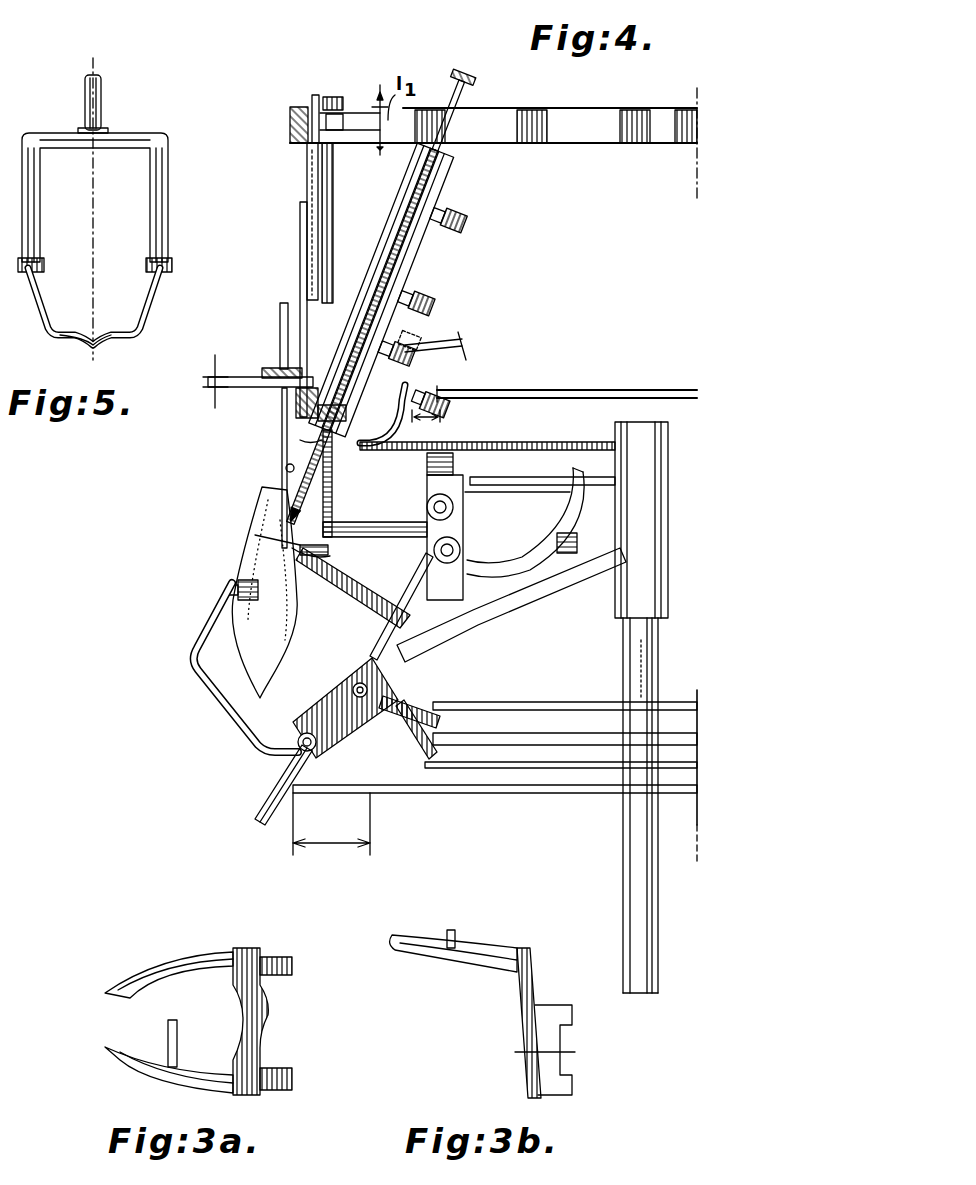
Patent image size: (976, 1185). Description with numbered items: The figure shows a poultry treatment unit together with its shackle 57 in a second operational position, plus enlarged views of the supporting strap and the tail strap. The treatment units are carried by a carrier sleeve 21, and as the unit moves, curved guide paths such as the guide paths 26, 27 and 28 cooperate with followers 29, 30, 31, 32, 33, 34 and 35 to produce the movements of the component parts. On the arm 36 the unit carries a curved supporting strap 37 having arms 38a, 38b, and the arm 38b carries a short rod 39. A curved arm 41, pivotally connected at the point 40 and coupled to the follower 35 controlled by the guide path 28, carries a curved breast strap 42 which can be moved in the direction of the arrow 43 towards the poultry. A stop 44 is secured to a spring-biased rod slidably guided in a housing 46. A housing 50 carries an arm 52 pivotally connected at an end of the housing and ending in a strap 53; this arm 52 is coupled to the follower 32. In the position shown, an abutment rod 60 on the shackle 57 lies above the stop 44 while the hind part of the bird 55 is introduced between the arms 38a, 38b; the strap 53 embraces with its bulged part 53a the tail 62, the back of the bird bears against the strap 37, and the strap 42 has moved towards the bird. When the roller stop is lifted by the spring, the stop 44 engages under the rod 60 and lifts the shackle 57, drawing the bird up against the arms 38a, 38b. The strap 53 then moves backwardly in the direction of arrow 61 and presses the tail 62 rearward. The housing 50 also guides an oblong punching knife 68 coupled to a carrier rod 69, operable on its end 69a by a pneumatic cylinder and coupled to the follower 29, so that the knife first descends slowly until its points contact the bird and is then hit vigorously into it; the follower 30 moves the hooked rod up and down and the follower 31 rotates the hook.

In FIG. 4, the carrier sleeve 21 is at (660, 520).
In FIG. 4, the guide path 26 is at (494, 702).
In FIG. 4, the guide path 27 is at (505, 770).
In FIG. 4, the guide path 28 is at (398, 795).
In FIG. 4, the follower 29 is at (469, 210).
In FIG. 4, the follower 30 is at (443, 290).
In FIG. 4, the follower 31 is at (418, 342).
In FIG. 4, the follower 32 is at (446, 408).
In FIG. 4, the follower 33 is at (410, 708).
In FIG. 4, the follower 34 is at (405, 742).
In FIG. 4, the follower 35 is at (268, 815).
In FIG. 4, the arm 36 is at (380, 600).
In FIG. 4, the supporting strap 37 is at (306, 588).
In FIG. 3A, the supporting strap 37 is at (270, 1022).
In FIG. 3B, the supporting strap 37 is at (535, 998).
In FIG. 3A, the arm 38a is at (155, 965).
In FIG. 4, the arm 38b is at (258, 540).
In FIG. 3A, the arm 38b is at (125, 1062).
In FIG. 3B, the arm 38b is at (420, 956).
In FIG. 3A, the short rod 39 is at (168, 1035).
In FIG. 3B, the short rod 39 is at (460, 938).
In FIG. 4, the pivot point 40 is at (296, 755).
In FIG. 4, the curved arm 41 is at (212, 690).
In FIG. 4, the breast strap 42 is at (226, 598).
In FIG. 4, the arrow 43 is at (212, 724).
In FIG. 4, the stop 44 is at (258, 375).
In FIG. 4, the housing 46 is at (315, 176).
In FIG. 4, the housing 50 is at (412, 185).
In FIG. 5, the arm 52 is at (102, 104).
In FIG. 5, the strap 53 is at (150, 297).
In FIG. 5, the bulged part 53a is at (85, 333).
In FIG. 4, the bird 55 is at (278, 610).
In FIG. 4, the shackle 57 is at (283, 303).
In FIG. 4, the abutment rod 60 is at (276, 368).
In FIG. 4, the arrow 61 is at (340, 505).
In FIG. 4, the tail 62 is at (325, 550).
In FIG. 4, the punching knife 68 is at (287, 470).
In FIG. 4, the carrier rod 69 is at (320, 440).
In FIG. 4, the end of carrier rod 69a is at (470, 85).